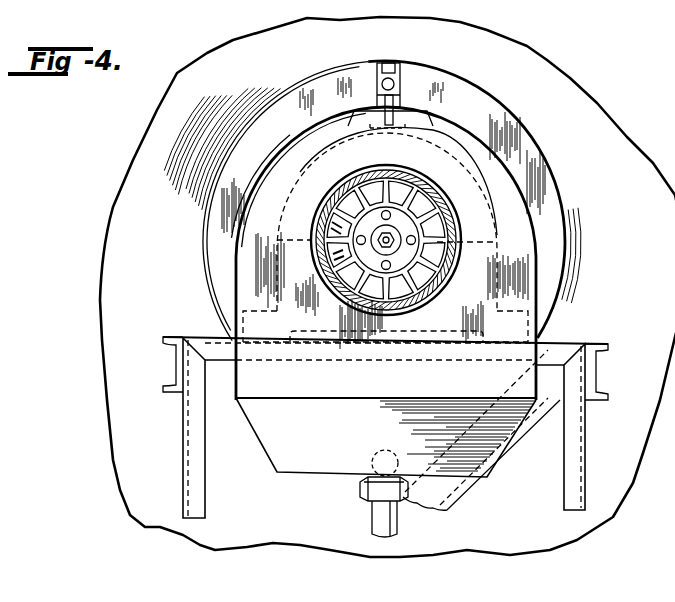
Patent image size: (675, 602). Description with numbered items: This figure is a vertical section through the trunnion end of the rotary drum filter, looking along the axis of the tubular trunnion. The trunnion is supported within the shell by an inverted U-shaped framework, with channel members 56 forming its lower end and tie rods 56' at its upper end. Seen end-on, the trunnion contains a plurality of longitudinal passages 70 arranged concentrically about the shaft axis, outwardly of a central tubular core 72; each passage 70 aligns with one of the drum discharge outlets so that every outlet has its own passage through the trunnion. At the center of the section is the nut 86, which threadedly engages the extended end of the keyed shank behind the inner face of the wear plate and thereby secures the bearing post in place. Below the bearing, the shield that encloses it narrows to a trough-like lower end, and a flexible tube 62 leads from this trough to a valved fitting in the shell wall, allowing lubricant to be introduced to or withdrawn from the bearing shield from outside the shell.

The channel members 56 is at (385, 427).
The tie rods 56' is at (422, 89).
The flexible tube 62 is at (367, 518).
The longitudinal passages 70 is at (452, 204).
The central tubular core 72 is at (419, 247).
The nut 86 is at (372, 235).